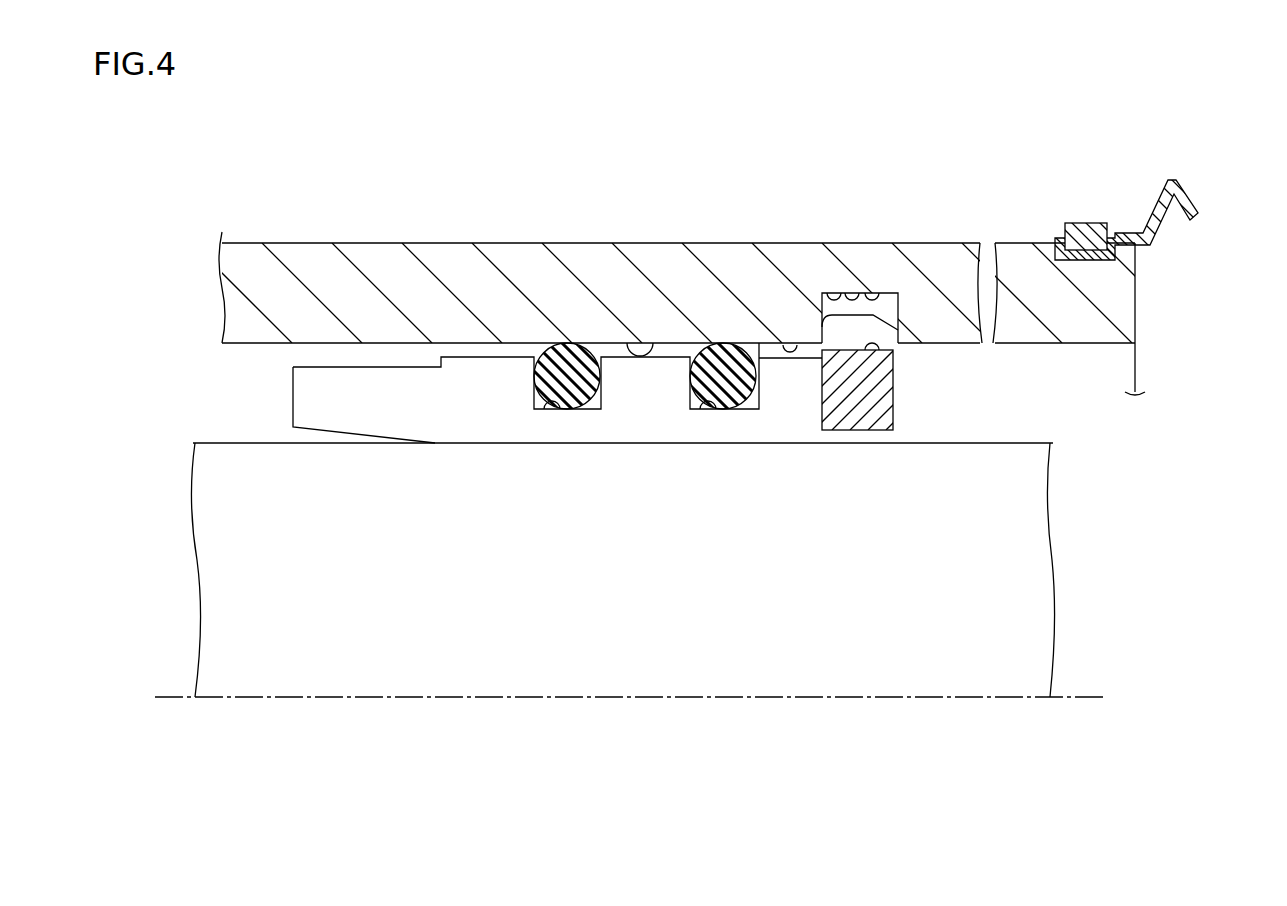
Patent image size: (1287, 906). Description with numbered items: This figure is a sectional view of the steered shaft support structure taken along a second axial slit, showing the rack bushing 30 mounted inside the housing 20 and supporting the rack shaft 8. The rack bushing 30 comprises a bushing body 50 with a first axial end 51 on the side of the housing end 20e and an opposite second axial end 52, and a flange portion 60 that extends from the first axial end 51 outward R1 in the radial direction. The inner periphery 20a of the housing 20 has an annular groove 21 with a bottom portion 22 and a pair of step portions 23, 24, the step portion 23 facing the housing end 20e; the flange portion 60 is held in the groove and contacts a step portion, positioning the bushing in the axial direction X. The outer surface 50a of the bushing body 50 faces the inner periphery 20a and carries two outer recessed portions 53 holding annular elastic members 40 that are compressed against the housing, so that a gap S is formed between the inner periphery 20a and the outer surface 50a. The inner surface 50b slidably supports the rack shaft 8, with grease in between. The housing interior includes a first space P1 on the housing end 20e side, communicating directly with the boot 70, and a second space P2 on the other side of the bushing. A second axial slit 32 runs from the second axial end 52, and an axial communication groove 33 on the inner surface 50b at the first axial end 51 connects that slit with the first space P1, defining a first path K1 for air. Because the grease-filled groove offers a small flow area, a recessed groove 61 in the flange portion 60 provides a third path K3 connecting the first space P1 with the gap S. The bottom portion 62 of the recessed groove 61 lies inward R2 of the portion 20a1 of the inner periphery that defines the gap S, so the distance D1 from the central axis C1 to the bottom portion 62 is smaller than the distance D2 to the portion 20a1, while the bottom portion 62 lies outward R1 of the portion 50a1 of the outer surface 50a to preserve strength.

The rack shaft 8 is at (1030, 557).
The housing 20 is at (480, 243).
The inner periphery of the housing 20a is at (633, 343).
The portion of the inner periphery adjacent to the step portion 20a1 is at (791, 343).
The housing end 20e is at (1135, 302).
The annular groove 21 is at (868, 292).
The bottom portion 22 is at (850, 292).
The step portion 23 is at (832, 292).
The step portion 24 is at (868, 295).
The rack bushing 30 is at (372, 355).
The second axial slit 32 is at (632, 434).
The axial communication groove 33 is at (838, 438).
The annular elastic member 40 is at (575, 372).
The bushing body 50 is at (507, 355).
The outer surface 50a is at (460, 355).
The portion defining the gap on the outer surface 50a1 is at (761, 345).
The inner surface 50b is at (475, 446).
The first axial end 51 is at (896, 414).
The second axial end 52 is at (290, 428).
The outer recessed portion 53 is at (552, 404).
The flange portion 60 is at (872, 325).
The recessed groove 61 is at (908, 342).
The bottom portion of the recessed groove 62 is at (877, 352).
The boot 70 is at (1160, 232).
The gap S is at (809, 348).
The first space P1 is at (960, 402).
The second space P2 is at (242, 397).
The first path K1 is at (960, 438).
The third path K3 is at (793, 388).
The distance D1 is at (857, 351).
The distance D2 is at (772, 345).
The outward radial direction R1 is at (655, 595).
The inward radial direction R2 is at (679, 595).
The axial direction X is at (528, 722).
The central axis C1 is at (1020, 700).